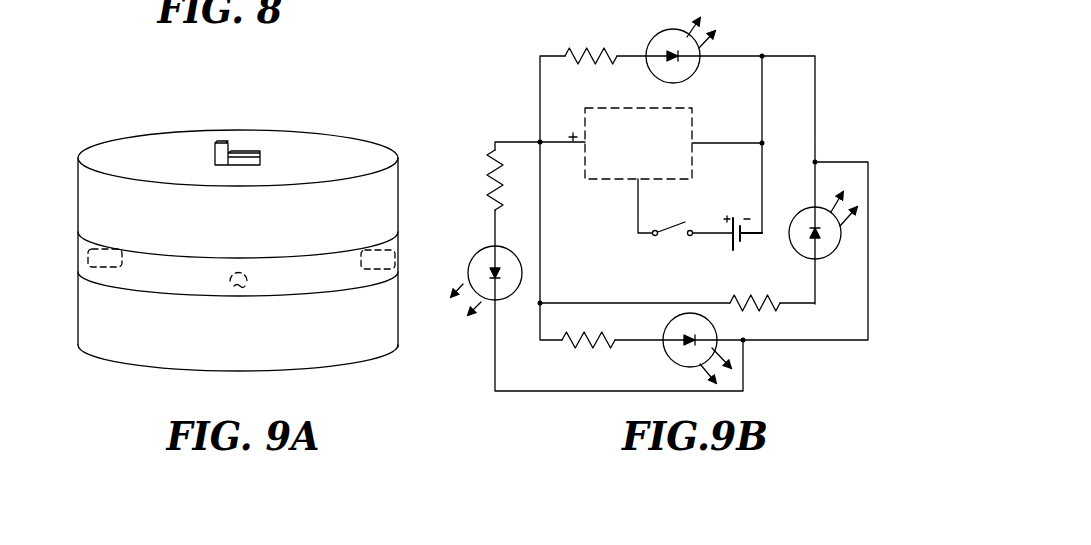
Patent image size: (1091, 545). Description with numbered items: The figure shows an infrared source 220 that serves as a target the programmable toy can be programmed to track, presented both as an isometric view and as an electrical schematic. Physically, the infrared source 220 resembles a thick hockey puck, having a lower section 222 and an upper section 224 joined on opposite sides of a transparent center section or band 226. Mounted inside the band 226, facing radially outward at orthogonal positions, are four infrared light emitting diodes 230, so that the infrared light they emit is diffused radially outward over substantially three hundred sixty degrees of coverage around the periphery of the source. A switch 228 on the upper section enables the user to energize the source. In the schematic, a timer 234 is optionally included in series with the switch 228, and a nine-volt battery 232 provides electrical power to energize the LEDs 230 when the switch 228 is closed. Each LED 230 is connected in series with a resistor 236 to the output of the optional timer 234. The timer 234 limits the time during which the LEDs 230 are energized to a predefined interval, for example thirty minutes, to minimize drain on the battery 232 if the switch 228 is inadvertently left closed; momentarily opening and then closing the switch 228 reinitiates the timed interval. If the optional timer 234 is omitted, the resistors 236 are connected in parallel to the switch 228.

In FIG. 9A, the infrared source 220 is at (139, 378).
In FIG. 9B, the infrared source 220 is at (540, 403).
In FIG. 9A, the lower section 222 is at (398, 334).
In FIG. 9A, the upper section 224 is at (366, 151).
In FIG. 9A, the transparent center section or band 226 is at (78, 270).
In FIG. 9A, the switch 228 is at (225, 142).
In FIG. 9B, the switch 228 is at (662, 236).
In FIG. 9A, the infrared light emitting diodes 230 is at (80, 256).
In FIG. 9B, the infrared light emitting diodes 230 is at (656, 40).
In FIG. 9B, the battery 232 is at (742, 244).
In FIG. 9B, the timer 234 is at (698, 122).
In FIG. 9B, the resistor 236 is at (566, 52).